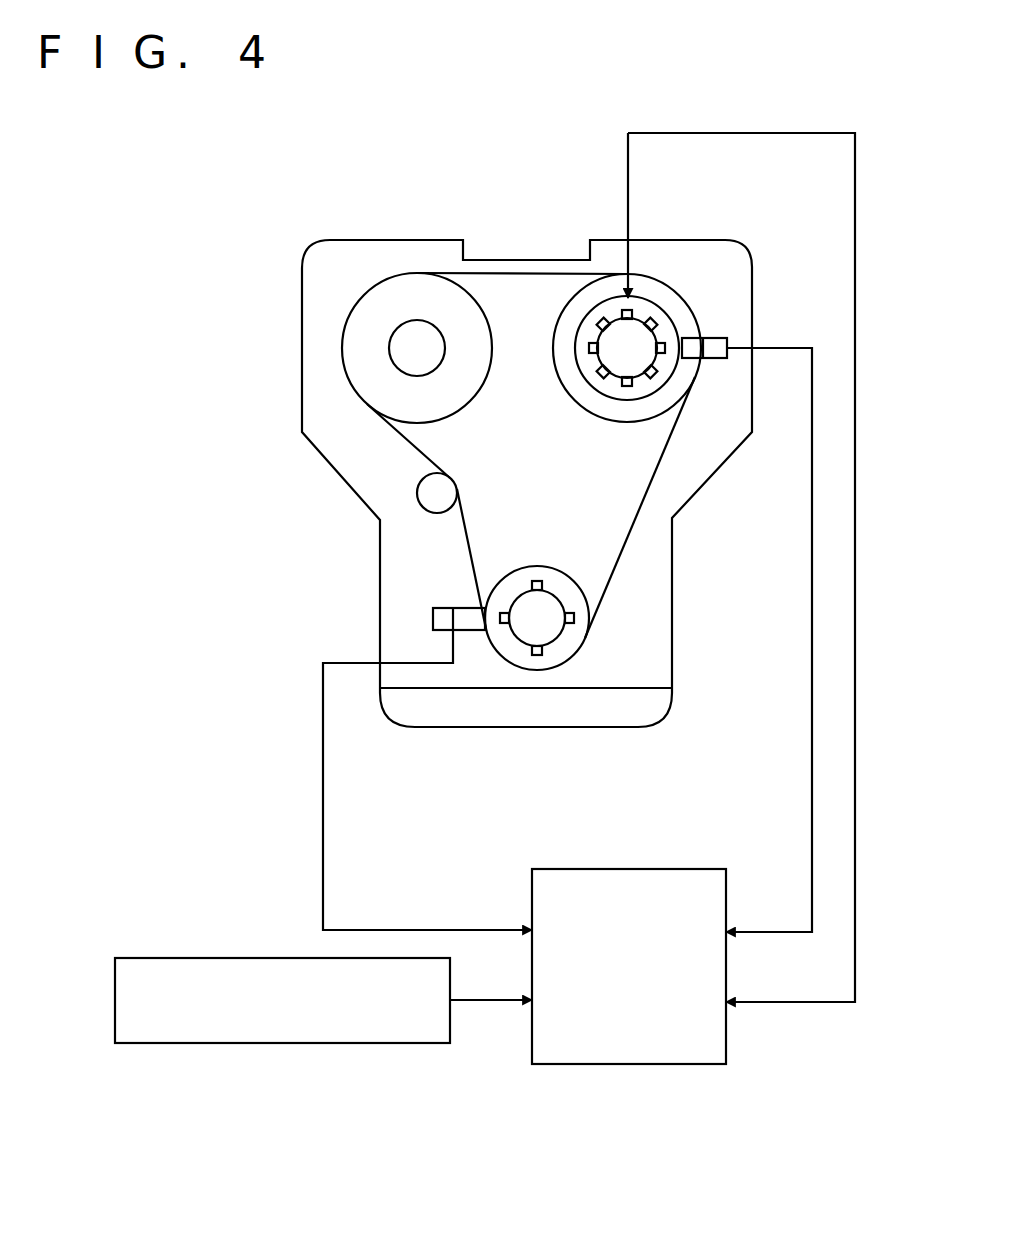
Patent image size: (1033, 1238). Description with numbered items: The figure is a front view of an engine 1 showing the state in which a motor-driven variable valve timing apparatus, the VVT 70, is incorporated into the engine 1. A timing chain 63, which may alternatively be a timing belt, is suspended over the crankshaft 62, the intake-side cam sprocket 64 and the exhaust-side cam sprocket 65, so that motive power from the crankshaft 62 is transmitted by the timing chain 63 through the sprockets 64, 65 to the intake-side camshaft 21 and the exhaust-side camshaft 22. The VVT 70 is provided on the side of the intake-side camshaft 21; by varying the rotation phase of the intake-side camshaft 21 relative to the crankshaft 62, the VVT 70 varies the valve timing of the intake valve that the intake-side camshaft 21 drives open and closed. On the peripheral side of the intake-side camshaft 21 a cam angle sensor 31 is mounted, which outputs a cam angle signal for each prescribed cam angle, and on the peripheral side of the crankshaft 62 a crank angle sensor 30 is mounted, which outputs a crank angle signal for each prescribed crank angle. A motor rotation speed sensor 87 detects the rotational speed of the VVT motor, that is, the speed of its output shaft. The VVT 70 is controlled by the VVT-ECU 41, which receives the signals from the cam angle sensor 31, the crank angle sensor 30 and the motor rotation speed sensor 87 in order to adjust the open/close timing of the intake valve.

The engine 1 is at (407, 237).
The intake-side camshaft 21 is at (618, 338).
The exhaust-side camshaft 22 is at (410, 356).
The crank angle sensor 30 is at (440, 608).
The cam angle sensor 31 is at (715, 337).
The VVT-ECU 41 is at (682, 869).
The crankshaft 62 is at (550, 632).
The timing chain 63 is at (620, 556).
The intake-side cam sprocket 64 is at (650, 292).
The exhaust-side cam sprocket 65 is at (368, 323).
The VVT 70 is at (668, 310).
The motor rotation speed sensor 87 is at (212, 958).